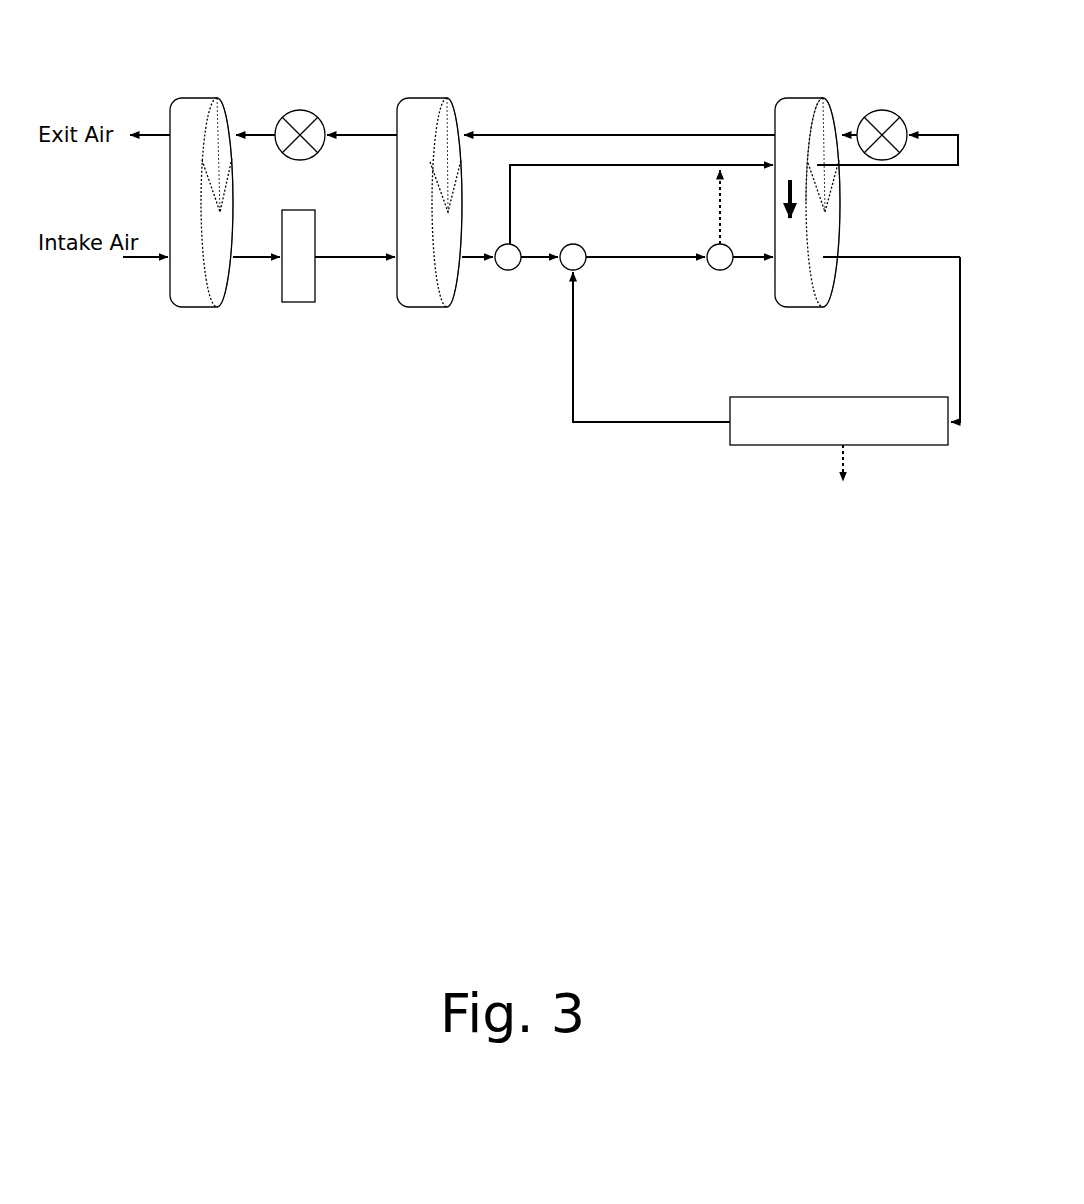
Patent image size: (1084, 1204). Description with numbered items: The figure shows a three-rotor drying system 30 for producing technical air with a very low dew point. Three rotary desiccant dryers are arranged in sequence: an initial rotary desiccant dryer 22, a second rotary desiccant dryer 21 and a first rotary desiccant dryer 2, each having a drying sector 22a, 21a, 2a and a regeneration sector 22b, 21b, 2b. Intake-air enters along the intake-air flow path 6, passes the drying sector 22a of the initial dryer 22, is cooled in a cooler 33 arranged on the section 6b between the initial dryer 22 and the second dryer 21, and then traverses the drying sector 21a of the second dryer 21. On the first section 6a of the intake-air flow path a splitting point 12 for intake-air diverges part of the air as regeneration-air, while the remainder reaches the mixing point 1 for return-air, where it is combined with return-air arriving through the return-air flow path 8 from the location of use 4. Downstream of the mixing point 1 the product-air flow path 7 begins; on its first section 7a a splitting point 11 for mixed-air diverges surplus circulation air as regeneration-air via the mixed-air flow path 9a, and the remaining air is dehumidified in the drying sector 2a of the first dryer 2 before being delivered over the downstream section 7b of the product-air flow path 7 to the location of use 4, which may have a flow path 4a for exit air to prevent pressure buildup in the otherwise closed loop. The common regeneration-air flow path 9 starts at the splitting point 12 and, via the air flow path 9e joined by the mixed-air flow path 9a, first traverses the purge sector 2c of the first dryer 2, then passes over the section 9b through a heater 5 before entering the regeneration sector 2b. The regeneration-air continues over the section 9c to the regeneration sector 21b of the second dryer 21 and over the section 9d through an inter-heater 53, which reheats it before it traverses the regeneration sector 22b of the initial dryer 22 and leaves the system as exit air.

The 3-rotor drying system 30 is at (232, 450).
The regeneration-air flow path 9 is at (150, 128).
The intake-air flow path 6 is at (143, 266).
The initial rotary desiccant dryer 22 is at (203, 295).
The drying sector of the initial rotary desiccant dryer 22a is at (220, 280).
The regeneration sector of the initial rotary desiccant dryer 22b is at (220, 122).
The inter-heater 53 is at (305, 108).
The section of the regeneration-air flow path between the second and initial dryers 9d is at (348, 126).
The cooler 33 is at (301, 306).
The section of the intake-air flow path between the second and initial dryers 6b is at (348, 266).
The second rotary desiccant dryer 21 is at (425, 311).
The drying sector of the second rotary desiccant dryer 21a is at (452, 280).
The regeneration sector of the second rotary desiccant dryer 21b is at (450, 122).
The section of the regeneration-air flow path between the first and second dryers 9c is at (582, 128).
The splitting point for intake-air 12 is at (504, 272).
The air flow path of the regeneration-air flow path 9e is at (516, 210).
The first section of the intake-air flow path 6a is at (536, 250).
The mixing point for return-air 1 is at (559, 270).
The first section of the product-air flow path 7a is at (645, 262).
The splitting point for mixed-air 11 is at (708, 274).
The mixed-air flow path 9a is at (712, 223).
The first rotary desiccant dryer 2 is at (775, 122).
The drying sector of the first rotary desiccant dryer 2a is at (832, 233).
The regeneration sector of the first rotary desiccant dryer 2b is at (832, 132).
The purge sector 2c is at (820, 123).
The heater 5 is at (905, 117).
The section of the regeneration-air flow path between the purge sector and regenerat 9b is at (926, 172).
The supply air line section 7b is at (860, 262).
The product-air flow path 7 is at (952, 387).
The return-air flow path 8 is at (580, 408).
The location of use 4 is at (880, 450).
The flow path for exit air 4a is at (838, 470).